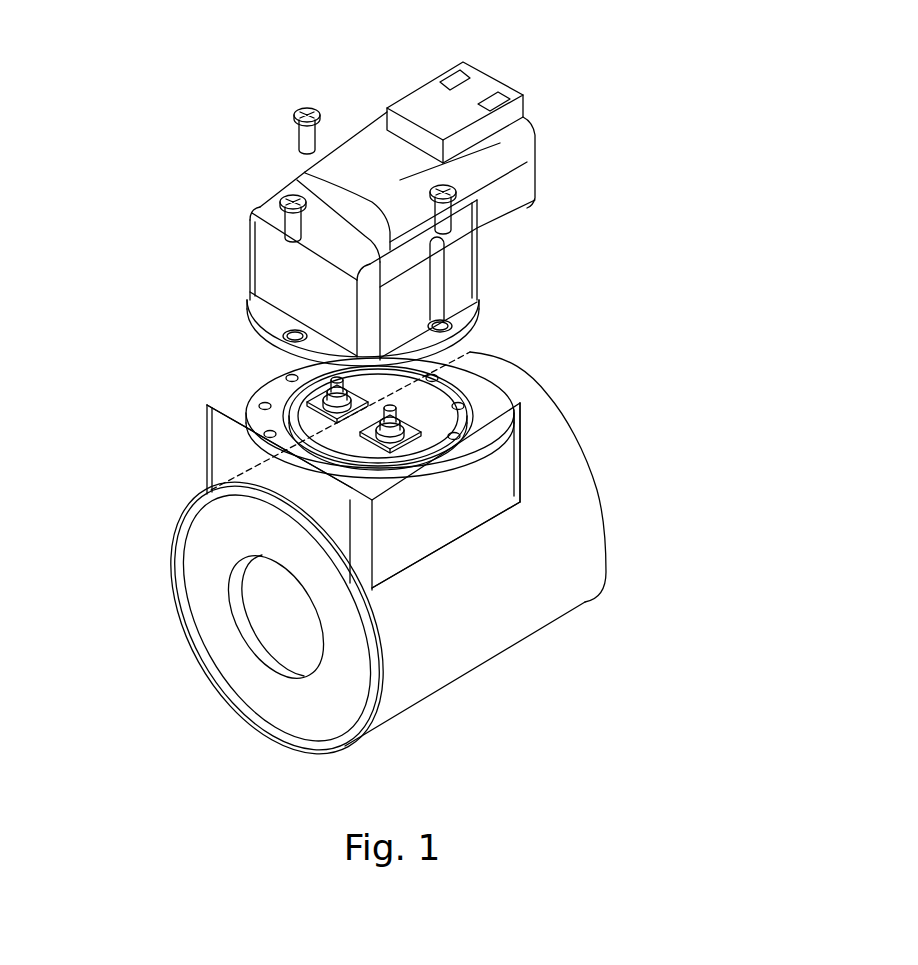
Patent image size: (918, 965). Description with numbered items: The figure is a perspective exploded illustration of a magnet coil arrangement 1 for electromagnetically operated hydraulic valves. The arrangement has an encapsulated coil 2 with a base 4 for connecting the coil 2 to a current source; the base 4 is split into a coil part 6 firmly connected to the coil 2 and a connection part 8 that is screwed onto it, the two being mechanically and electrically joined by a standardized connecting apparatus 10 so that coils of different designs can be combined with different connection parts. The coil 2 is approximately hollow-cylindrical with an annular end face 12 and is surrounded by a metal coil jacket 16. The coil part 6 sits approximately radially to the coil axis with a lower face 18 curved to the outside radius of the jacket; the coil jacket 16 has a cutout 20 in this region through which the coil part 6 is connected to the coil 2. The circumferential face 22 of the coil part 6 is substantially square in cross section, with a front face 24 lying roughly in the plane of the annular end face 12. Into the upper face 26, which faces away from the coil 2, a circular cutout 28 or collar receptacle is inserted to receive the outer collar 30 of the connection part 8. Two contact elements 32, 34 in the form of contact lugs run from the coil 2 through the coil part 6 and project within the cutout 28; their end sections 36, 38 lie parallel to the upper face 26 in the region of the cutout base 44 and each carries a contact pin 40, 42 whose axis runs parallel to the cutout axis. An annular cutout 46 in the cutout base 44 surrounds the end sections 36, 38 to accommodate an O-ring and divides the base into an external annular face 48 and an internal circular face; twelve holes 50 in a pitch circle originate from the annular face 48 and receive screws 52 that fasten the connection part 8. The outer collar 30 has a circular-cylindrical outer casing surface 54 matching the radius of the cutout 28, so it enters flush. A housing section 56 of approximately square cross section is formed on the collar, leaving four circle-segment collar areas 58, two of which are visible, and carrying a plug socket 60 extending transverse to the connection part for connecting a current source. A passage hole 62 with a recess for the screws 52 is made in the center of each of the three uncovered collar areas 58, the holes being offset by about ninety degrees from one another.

The magnet coil arrangement 1 is at (590, 74).
The encapsulated coil 2 is at (587, 553).
The base 4 is at (573, 292).
The coil part 6 is at (508, 450).
The connection part 8 is at (378, 160).
The connecting apparatus 10 is at (190, 322).
The annular end face 12 is at (320, 707).
The coil jacket 16 is at (523, 610).
The lower face 18 is at (457, 540).
The cutout 20 is at (228, 497).
The circumferential face 22 is at (236, 433).
The front face 24 is at (346, 524).
The upper face 26 is at (237, 413).
The cutout 28 is at (270, 382).
The outer collar 30 is at (247, 313).
The contact element 32 is at (468, 387).
The contact element 34 is at (505, 398).
The end section 36 is at (322, 448).
The end section 38 is at (400, 455).
The contact pin 40 is at (338, 378).
The contact pin 42 is at (430, 456).
The cutout base 44 is at (356, 448).
The annular cutout 46 is at (258, 447).
The annular face 48 is at (332, 530).
The holes 50 is at (470, 448).
The screw 52 is at (297, 138).
The outer casing surface 54 is at (467, 327).
The housing section 56 is at (268, 262).
The collar areas 58 is at (278, 329).
The plug socket 60 is at (430, 100).
The passage hole 62 is at (455, 300).